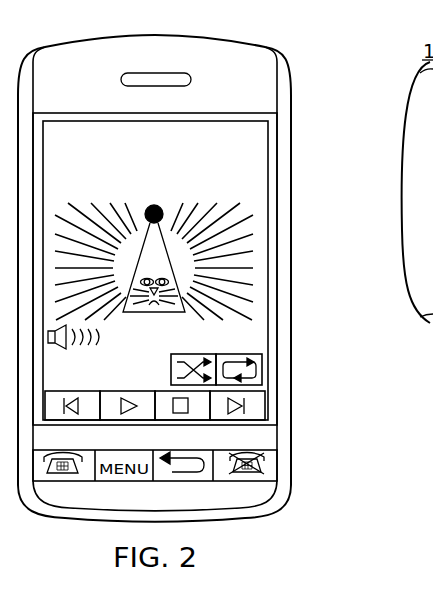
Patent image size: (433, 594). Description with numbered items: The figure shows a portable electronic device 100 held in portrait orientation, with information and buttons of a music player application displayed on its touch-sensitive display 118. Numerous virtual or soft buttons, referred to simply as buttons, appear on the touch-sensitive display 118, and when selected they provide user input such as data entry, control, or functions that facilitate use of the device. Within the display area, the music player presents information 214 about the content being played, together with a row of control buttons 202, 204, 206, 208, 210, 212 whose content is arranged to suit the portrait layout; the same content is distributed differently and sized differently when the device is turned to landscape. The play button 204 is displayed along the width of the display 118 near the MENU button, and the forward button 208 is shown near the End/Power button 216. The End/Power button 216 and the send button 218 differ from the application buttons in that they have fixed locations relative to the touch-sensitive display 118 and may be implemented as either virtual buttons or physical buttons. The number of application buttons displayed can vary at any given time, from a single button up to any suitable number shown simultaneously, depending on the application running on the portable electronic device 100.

The portable electronic device 100 is at (57, 32).
The touch-sensitive display 118 is at (253, 145).
The information 214 is at (247, 208).
The button 212 is at (193, 355).
The button 210 is at (247, 355).
The forward button 208 is at (263, 411).
The button 206 is at (194, 410).
The play button 204 is at (133, 407).
The button 202 is at (88, 408).
The End/Power button 216 is at (267, 468).
The send button 218 is at (84, 470).